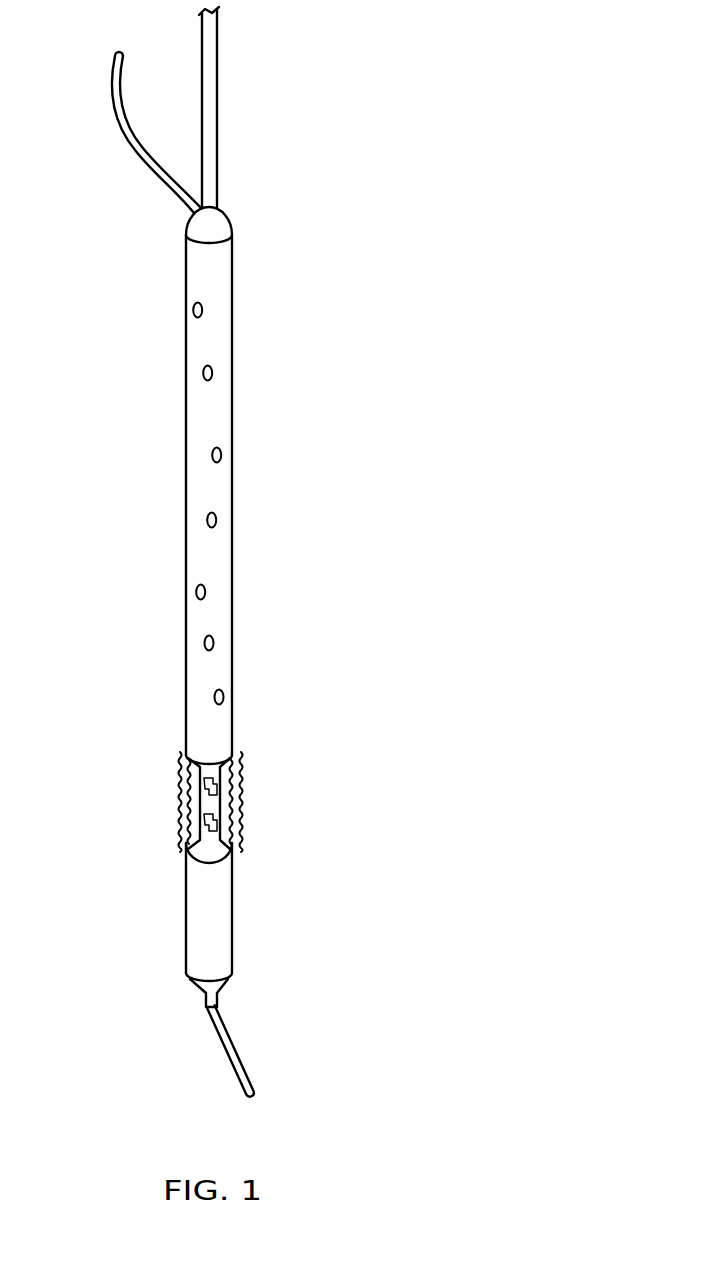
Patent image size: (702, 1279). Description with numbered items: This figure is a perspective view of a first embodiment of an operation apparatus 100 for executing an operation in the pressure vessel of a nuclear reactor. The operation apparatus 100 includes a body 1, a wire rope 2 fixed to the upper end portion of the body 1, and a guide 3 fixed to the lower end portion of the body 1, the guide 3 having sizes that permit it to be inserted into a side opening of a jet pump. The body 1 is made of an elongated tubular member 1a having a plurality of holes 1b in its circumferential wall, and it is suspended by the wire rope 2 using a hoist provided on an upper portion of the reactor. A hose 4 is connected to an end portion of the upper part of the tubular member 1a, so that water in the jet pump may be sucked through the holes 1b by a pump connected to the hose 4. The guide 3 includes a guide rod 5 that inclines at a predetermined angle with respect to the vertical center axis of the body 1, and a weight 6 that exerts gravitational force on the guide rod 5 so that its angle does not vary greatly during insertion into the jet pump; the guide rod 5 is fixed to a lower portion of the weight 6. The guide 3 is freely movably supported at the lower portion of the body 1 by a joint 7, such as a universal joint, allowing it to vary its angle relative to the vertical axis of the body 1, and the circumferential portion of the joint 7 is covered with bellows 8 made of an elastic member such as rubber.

The operation apparatus 100 is at (468, 496).
The body 1 is at (276, 485).
The tubular member 1a is at (205, 407).
The holes 1b is at (221, 454).
The wire rope 2 is at (210, 85).
The guide 3 is at (278, 970).
The hose 4 is at (145, 150).
The guide rod 5 is at (266, 1050).
The weight 6 is at (218, 940).
The joint 7 is at (215, 812).
The bellows 8 is at (180, 793).